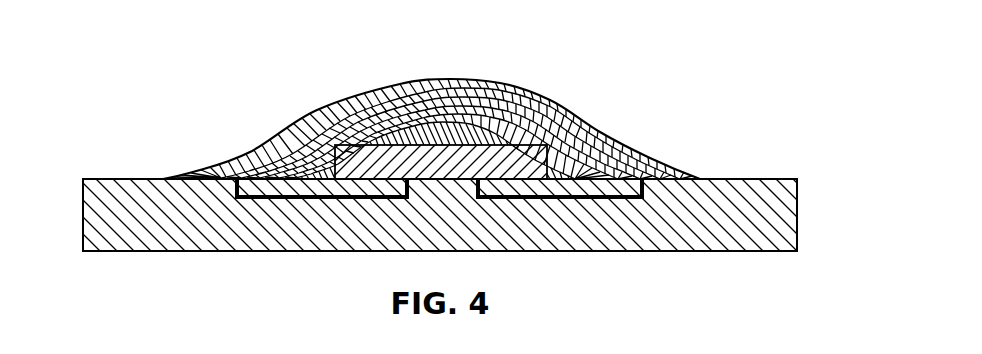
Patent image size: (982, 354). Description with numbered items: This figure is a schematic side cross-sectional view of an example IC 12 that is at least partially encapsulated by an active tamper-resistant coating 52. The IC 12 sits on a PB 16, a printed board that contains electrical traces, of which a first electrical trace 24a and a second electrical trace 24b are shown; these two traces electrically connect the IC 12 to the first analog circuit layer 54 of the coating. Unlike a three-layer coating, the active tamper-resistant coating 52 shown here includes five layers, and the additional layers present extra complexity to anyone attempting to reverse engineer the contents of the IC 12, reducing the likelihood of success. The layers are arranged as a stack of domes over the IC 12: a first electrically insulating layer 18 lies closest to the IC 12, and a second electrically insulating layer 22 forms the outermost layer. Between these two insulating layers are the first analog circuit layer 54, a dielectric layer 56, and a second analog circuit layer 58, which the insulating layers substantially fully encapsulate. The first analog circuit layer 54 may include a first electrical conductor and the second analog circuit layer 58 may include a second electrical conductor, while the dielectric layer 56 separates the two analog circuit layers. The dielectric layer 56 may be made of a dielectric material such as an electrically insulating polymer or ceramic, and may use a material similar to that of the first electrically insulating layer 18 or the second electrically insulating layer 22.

The PB 16 is at (83, 220).
The first electrical trace 24a is at (303, 199).
The second electrical trace 24b is at (590, 199).
The IC 12 is at (345, 162).
The first electrically insulating layer 18 is at (527, 132).
The second electrically insulating layer 22 is at (440, 84).
The active tamper-resistant coating 52 is at (431, 105).
The first analog circuit layer 54 is at (482, 102).
The dielectric layer 56 is at (385, 105).
The second analog circuit layer 58 is at (583, 146).